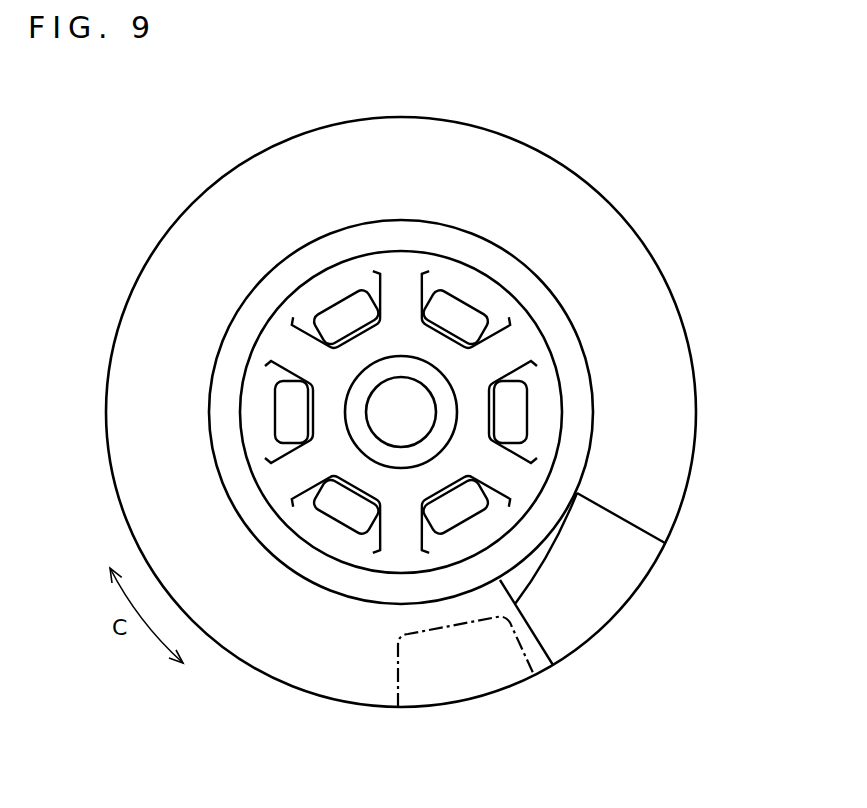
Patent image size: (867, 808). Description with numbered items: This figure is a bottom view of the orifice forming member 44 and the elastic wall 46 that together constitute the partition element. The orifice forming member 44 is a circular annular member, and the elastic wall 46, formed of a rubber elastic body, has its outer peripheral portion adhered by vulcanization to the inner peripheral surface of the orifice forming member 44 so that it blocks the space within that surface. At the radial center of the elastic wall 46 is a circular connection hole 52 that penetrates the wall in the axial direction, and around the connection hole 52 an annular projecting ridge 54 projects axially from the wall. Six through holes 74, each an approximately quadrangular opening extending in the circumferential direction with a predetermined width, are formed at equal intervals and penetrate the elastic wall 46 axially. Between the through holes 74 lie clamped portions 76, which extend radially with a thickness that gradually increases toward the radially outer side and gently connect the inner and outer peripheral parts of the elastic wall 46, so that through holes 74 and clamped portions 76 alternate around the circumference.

The orifice forming member 44 is at (570, 210).
The elastic wall 46 is at (407, 272).
The connection hole 52 is at (389, 438).
The annular projecting ridge 54 is at (411, 463).
The through hole 74 is at (527, 390).
The clamped portion 76 is at (302, 353).